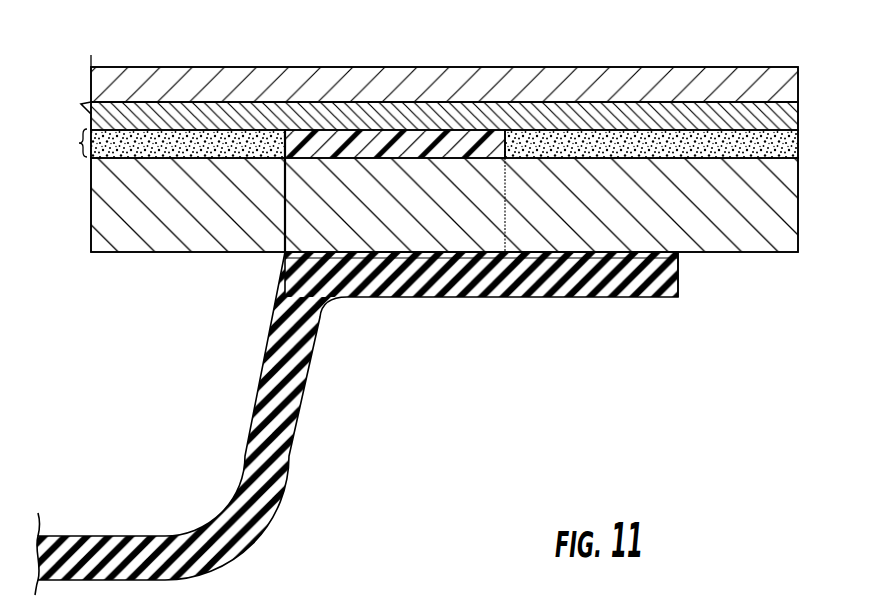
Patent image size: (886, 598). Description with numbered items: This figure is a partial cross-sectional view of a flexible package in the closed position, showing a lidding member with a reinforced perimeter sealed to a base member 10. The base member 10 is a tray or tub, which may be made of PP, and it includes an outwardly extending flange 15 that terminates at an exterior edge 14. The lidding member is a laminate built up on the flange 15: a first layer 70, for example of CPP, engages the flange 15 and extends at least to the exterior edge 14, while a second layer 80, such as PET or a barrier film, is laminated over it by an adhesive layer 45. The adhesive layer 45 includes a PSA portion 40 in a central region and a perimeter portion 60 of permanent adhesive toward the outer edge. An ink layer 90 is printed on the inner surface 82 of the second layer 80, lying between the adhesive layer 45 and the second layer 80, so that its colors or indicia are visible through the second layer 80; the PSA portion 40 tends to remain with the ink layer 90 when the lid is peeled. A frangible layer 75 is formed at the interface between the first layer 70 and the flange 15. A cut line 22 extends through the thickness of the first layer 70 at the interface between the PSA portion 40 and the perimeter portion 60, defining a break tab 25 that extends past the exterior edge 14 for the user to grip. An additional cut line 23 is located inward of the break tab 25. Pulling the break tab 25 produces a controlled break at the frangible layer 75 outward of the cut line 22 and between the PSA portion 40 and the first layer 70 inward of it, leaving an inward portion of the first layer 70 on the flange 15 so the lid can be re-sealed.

The base member 10 is at (283, 442).
The exterior edge 14 is at (678, 272).
The flange 15 is at (443, 297).
The cut line 22 is at (506, 258).
The cut line 23 is at (288, 128).
The break tab 25 is at (780, 275).
The PSA portion 40 is at (436, 135).
The adhesive layer 45 is at (79, 143).
The perimeter portion 60 is at (790, 143).
The first layer 70 is at (805, 158).
The frangible layer 75 is at (284, 257).
The second layer 80 is at (805, 67).
The inner surface 82 is at (655, 110).
The ink layer 90 is at (266, 115).